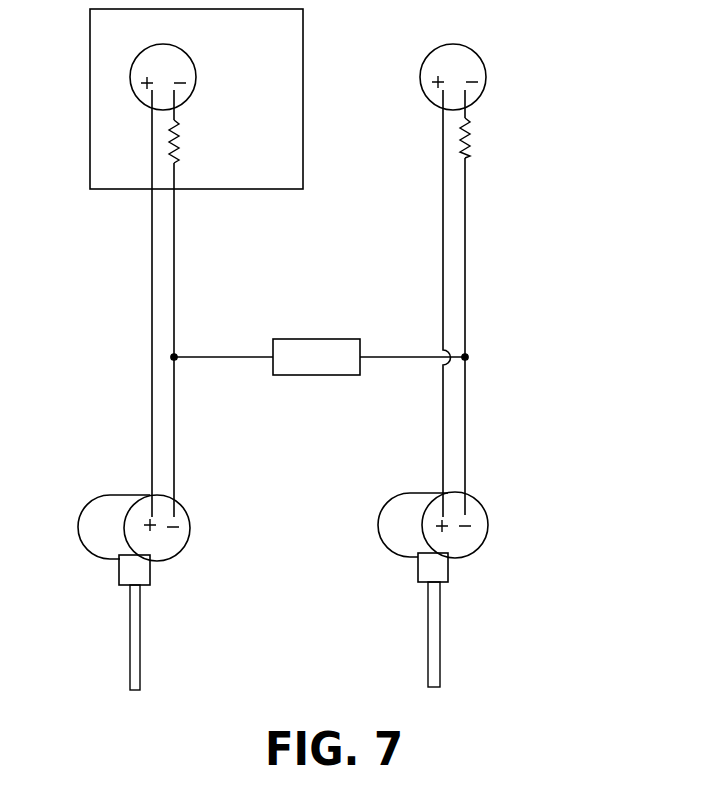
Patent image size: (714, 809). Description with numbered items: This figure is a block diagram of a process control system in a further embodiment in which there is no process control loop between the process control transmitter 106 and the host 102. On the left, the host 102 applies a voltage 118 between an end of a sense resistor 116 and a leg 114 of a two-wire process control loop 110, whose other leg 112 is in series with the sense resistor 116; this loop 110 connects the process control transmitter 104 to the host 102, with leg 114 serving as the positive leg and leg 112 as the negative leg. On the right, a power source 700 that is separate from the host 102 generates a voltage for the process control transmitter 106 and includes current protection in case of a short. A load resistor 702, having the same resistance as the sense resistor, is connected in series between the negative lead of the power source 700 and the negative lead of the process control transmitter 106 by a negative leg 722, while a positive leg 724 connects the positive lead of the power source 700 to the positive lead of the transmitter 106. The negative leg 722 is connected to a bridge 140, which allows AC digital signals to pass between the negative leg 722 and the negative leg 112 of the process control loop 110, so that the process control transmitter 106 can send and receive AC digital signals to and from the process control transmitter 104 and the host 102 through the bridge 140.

The host 102 is at (243, 36).
The voltage 118 is at (186, 47).
The sense resistor 116 is at (181, 135).
The leg 114 is at (152, 340).
The leg 112 is at (175, 267).
The two-wire process control loop 110 is at (126, 397).
The bridge 140 is at (305, 375).
The power source 700 is at (486, 62).
The load resistor 702 is at (472, 143).
The positive leg 724 is at (443, 257).
The negative leg 722 is at (466, 308).
The process control transmitter 104 is at (158, 563).
The process control transmitter 106 is at (458, 560).